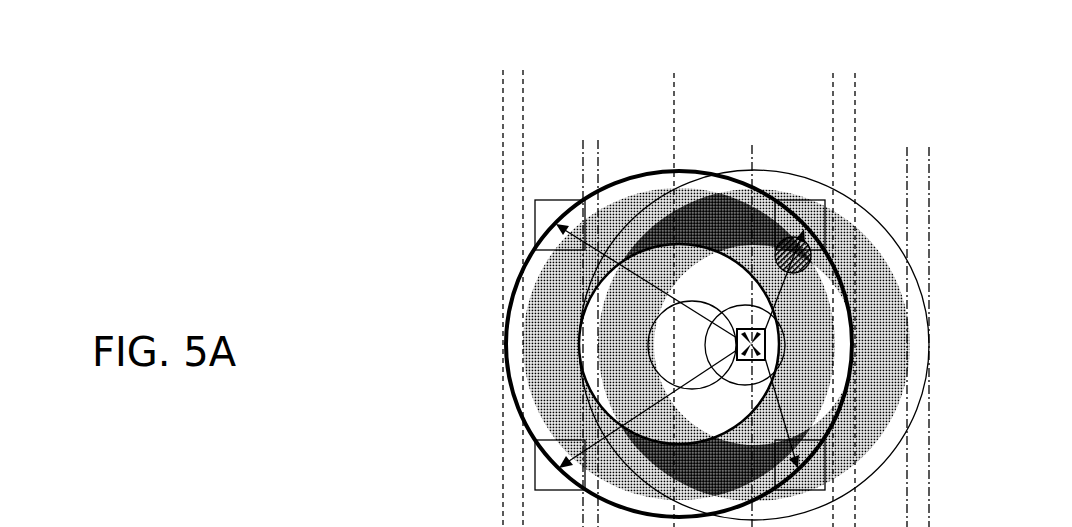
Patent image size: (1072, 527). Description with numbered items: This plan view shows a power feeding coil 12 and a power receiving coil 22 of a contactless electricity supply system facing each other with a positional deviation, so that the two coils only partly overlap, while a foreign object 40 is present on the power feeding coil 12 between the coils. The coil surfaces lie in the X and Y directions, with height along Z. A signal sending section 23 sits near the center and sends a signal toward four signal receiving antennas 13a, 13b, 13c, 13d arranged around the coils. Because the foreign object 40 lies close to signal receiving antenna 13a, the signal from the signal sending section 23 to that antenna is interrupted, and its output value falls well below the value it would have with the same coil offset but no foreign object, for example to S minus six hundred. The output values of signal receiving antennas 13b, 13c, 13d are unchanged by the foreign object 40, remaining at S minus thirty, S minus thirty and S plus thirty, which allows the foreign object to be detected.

The power feeding coil 12 is at (434, 210).
The signal receiving antenna 13a is at (758, 140).
The signal receiving antenna 13b is at (506, 137).
The signal receiving antenna 13c is at (460, 440).
The signal receiving antenna 13d is at (899, 448).
The power receiving coil 22 is at (878, 209).
The signal sending section 23 is at (765, 340).
The foreign object 40 is at (679, 261).